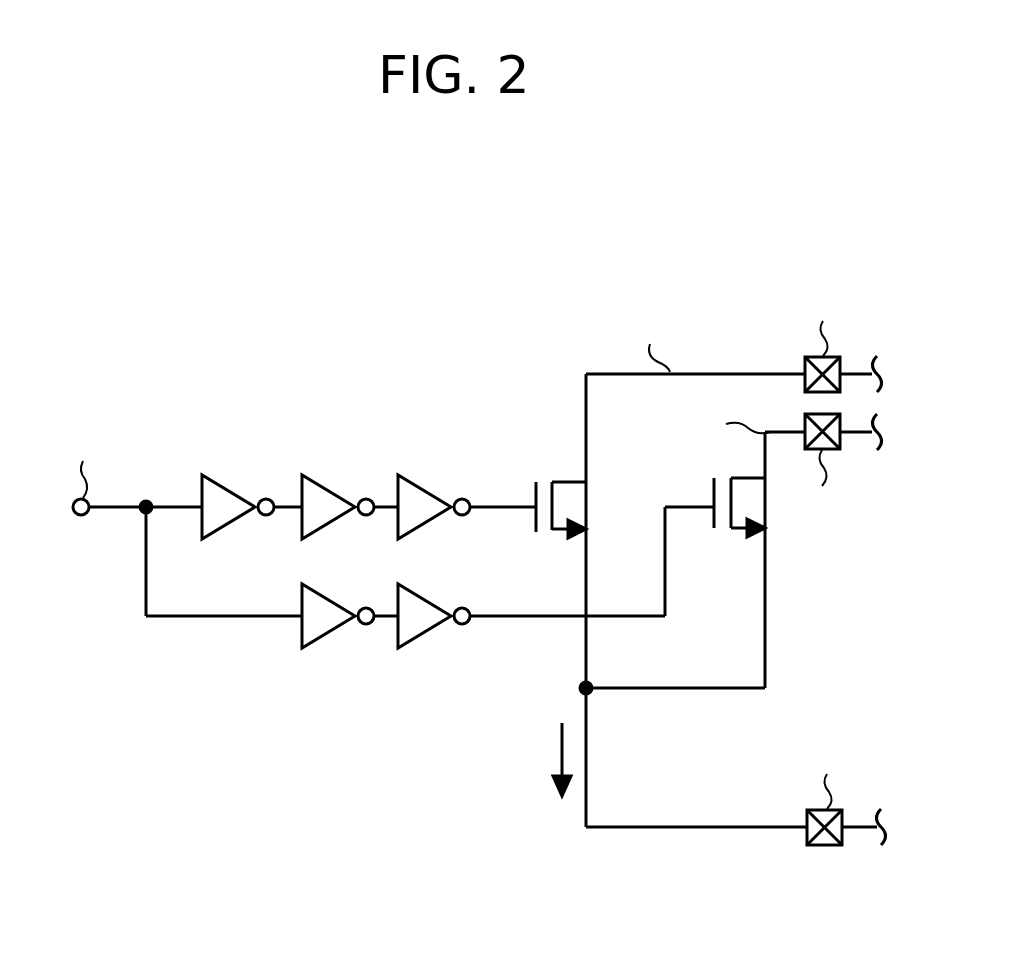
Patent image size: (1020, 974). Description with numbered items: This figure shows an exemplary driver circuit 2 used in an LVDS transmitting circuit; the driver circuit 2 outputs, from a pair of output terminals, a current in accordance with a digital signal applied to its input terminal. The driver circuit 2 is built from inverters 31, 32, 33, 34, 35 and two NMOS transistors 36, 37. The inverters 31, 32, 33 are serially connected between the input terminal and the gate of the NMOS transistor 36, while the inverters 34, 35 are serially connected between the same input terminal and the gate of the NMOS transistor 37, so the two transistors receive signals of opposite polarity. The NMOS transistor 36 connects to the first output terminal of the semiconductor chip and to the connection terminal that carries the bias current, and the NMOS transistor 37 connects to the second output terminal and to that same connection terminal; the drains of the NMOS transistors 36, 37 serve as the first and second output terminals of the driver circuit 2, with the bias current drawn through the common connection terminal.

The driver circuit 2 is at (458, 284).
The inverter 31 is at (236, 484).
The inverter 32 is at (335, 484).
The inverter 33 is at (435, 484).
The inverter 34 is at (326, 639).
The inverter 35 is at (427, 639).
The NMOS transistor 36 is at (542, 473).
The NMOS transistor 37 is at (724, 535).